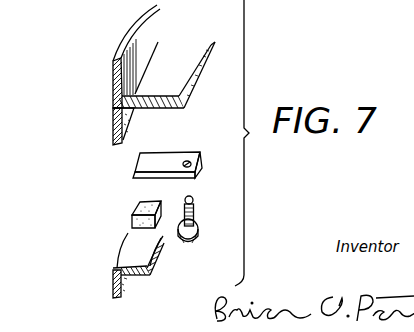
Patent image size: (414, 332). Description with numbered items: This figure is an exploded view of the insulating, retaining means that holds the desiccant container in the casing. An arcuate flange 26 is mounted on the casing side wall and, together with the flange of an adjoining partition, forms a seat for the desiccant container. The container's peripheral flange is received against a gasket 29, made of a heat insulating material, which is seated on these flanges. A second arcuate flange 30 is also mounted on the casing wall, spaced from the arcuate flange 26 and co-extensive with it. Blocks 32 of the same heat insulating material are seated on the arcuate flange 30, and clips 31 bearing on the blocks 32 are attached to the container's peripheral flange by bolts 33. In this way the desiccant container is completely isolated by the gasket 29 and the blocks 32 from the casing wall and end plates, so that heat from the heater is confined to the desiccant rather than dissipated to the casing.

The arcuate flange 26 is at (118, 74).
The gasket 29 is at (118, 126).
The clips 31 is at (148, 162).
The blocks 32 is at (132, 205).
The bolts 33 is at (194, 216).
The arcuate flange 30 is at (113, 282).